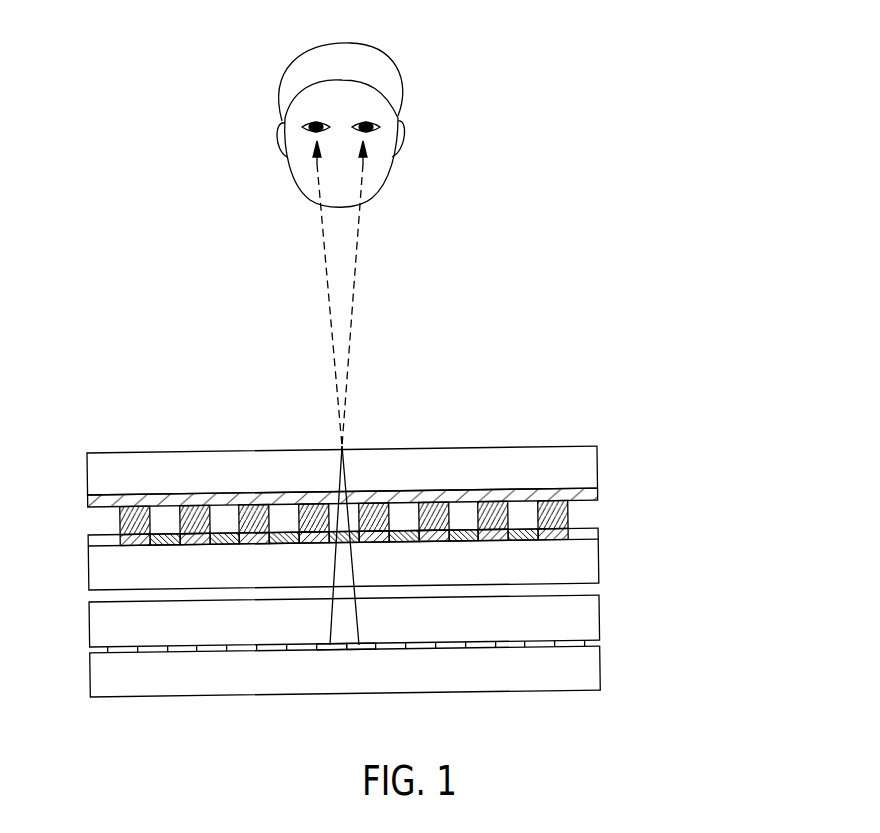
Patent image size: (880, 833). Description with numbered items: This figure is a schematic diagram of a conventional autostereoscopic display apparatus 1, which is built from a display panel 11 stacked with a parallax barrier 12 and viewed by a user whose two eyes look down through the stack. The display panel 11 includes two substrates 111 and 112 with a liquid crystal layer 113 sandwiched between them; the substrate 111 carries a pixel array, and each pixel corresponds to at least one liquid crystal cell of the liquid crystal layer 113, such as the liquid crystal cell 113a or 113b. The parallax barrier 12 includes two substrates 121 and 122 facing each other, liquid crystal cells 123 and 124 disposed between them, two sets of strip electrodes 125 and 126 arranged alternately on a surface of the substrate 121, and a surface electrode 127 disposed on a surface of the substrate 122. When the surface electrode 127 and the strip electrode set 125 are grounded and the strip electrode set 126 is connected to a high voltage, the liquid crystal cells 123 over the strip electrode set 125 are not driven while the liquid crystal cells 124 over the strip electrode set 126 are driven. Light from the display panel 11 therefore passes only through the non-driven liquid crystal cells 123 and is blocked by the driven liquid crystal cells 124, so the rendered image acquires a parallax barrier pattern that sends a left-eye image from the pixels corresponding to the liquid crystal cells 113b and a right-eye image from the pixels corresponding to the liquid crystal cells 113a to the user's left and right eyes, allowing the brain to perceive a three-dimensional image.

The autostereoscopic display apparatus 1 is at (108, 390).
The display panel 11 is at (692, 615).
The substrate 111 is at (592, 670).
The substrate 112 is at (592, 620).
The liquid crystal layer 113 is at (327, 740).
The liquid crystal cell 113a is at (320, 648).
The liquid crystal cell 113b is at (353, 648).
The parallax barrier 12 is at (692, 458).
The substrate 121 is at (592, 560).
The substrate 122 is at (592, 465).
The liquid crystal cell 123 is at (455, 508).
The liquid crystal cell 124 is at (370, 505).
The strip electrode set 125 is at (225, 506).
The strip electrode set 126 is at (310, 506).
The surface electrode 127 is at (592, 497).